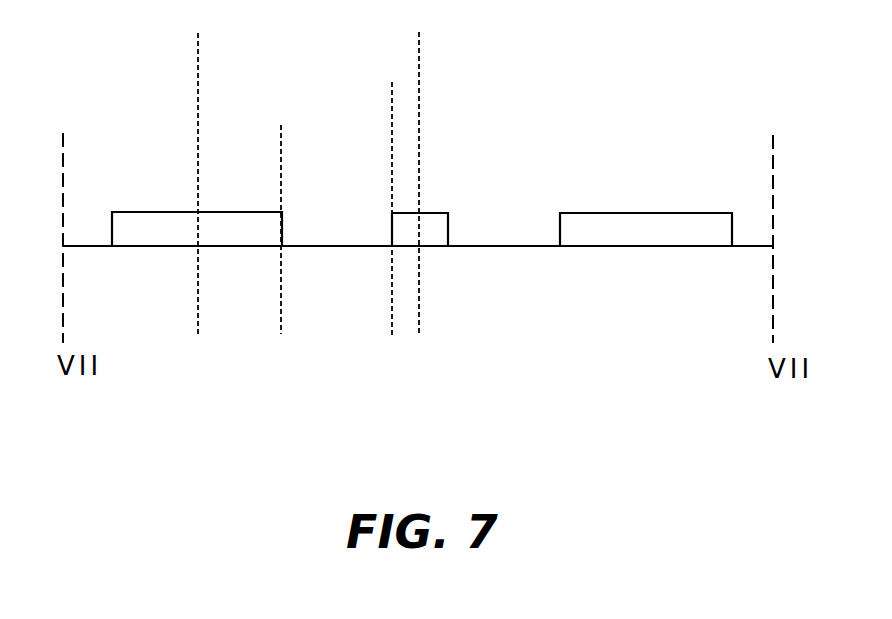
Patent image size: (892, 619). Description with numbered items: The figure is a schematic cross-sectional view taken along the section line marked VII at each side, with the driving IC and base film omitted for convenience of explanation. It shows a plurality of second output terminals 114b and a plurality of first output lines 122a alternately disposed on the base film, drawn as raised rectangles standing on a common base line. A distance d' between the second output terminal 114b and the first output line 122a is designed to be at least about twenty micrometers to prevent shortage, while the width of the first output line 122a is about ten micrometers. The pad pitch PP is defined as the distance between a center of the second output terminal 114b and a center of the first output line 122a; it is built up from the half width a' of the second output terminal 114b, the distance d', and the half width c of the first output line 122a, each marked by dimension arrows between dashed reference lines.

The second output terminal 114b is at (133, 222).
The first output line 122a is at (431, 240).
The pad pitch PP is at (419, 44).
The half width of the second output terminal a' is at (239, 129).
The distance between the second output terminal and the first output line d' is at (336, 129).
The half width of the first output line c is at (360, 90).